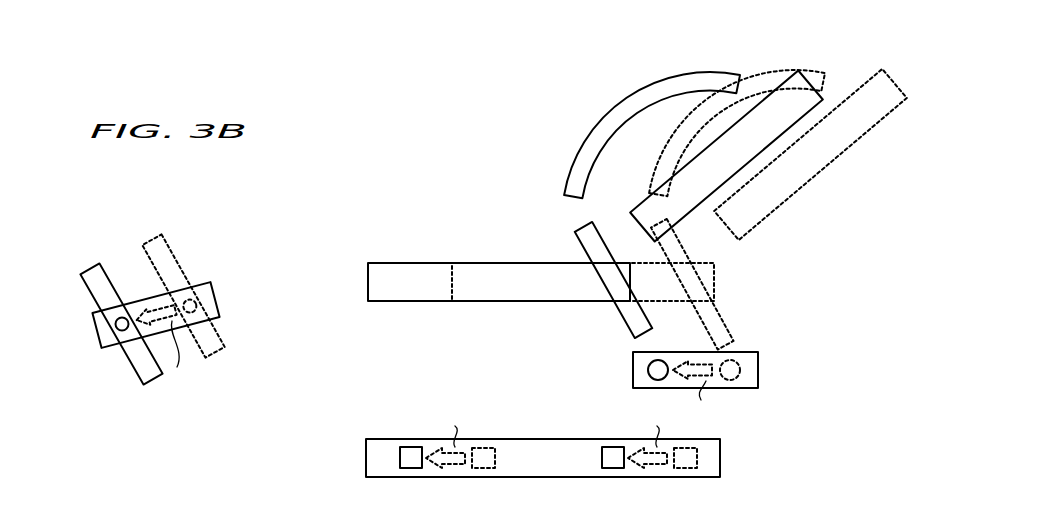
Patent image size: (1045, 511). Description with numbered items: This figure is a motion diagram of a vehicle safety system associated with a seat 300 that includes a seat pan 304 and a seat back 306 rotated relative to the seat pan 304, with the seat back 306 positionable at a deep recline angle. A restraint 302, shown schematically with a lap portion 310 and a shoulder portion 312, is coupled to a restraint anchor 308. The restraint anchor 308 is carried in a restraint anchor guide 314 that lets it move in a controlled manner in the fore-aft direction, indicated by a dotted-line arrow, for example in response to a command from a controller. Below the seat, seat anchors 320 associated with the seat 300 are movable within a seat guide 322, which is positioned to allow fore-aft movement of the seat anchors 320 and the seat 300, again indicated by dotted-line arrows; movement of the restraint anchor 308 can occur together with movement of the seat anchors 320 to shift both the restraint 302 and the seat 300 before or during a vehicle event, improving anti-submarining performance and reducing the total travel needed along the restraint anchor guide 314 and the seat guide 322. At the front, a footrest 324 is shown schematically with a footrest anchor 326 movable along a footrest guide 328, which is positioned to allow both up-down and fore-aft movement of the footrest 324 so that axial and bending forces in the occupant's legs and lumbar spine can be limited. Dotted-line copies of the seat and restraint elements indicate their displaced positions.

The seat 300 is at (427, 224).
The restraint 302 is at (560, 120).
The seat pan 304 is at (368, 282).
The seat back 306 is at (798, 70).
The restraint anchor 308 is at (647, 366).
The lap portion 310 is at (622, 318).
The shoulder portion 312 is at (707, 72).
The restraint anchor guide 314 is at (760, 371).
The seat anchors 320 is at (413, 447).
The seat guide 322 is at (366, 454).
The footrest 324 is at (91, 263).
The footrest anchor 326 is at (115, 325).
The footrest guide 328 is at (208, 282).